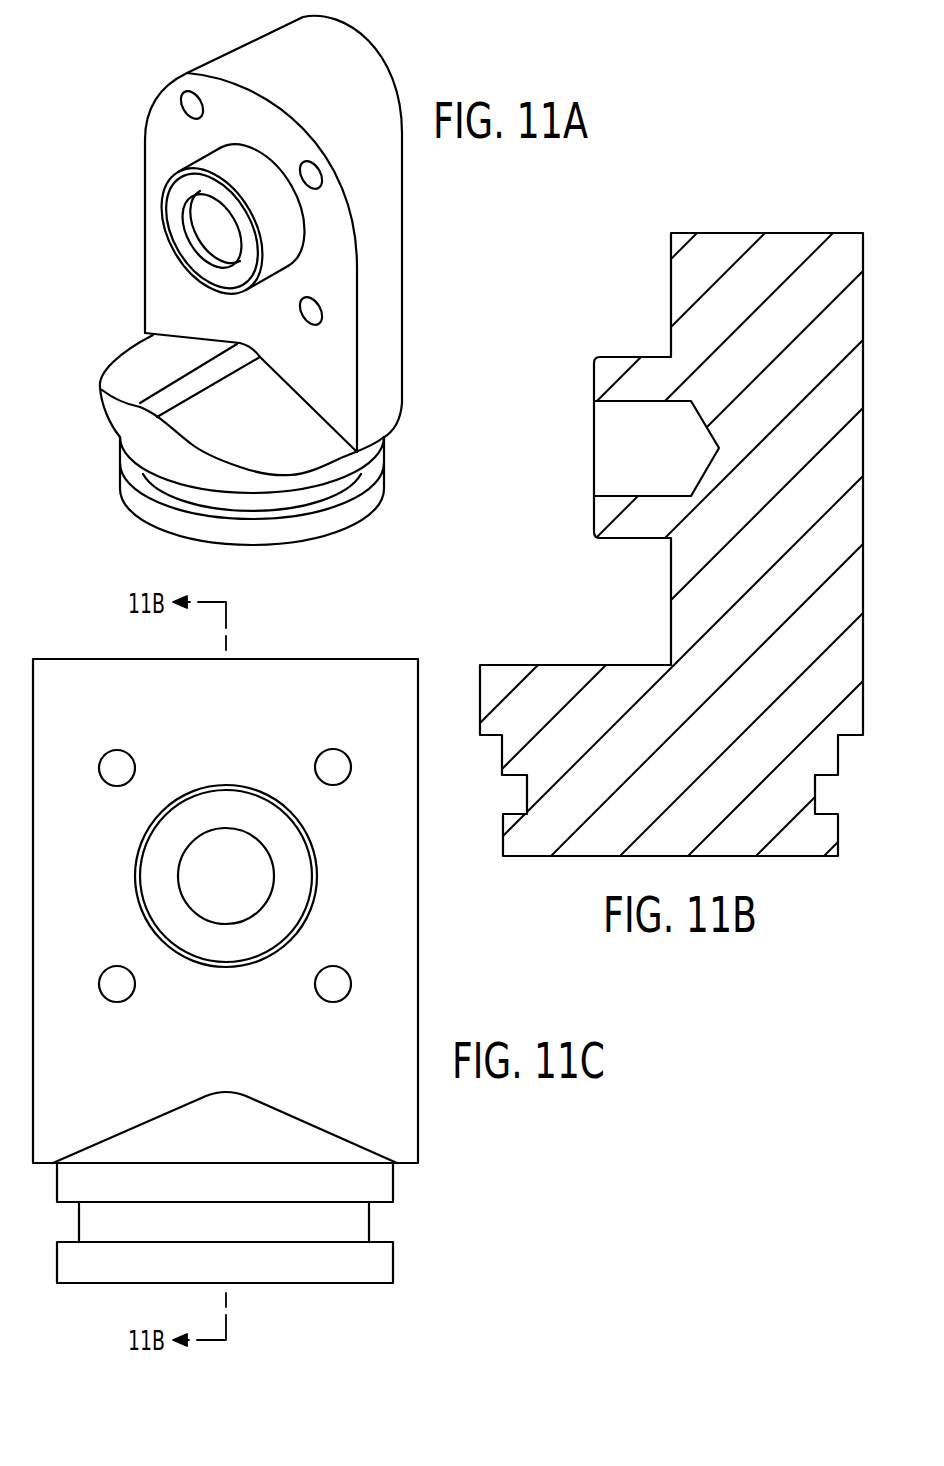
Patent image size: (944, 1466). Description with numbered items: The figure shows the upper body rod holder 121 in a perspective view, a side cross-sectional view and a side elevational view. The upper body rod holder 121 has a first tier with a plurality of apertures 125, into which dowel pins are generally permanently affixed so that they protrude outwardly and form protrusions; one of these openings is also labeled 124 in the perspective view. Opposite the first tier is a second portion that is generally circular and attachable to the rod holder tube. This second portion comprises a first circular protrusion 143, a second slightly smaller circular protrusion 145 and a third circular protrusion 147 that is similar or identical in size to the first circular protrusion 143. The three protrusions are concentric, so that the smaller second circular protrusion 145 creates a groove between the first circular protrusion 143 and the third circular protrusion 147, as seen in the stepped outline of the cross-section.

In FIG. 11A, the upper body rod holder 121 is at (265, 50).
In FIG. 11A, the mounting hole 124 is at (190, 105).
In FIG. 11A, the apertures 125 is at (312, 315).
In FIG. 11C, the apertures 125 is at (335, 748).
In FIG. 11C, the first circular protrusion 143 is at (395, 1185).
In FIG. 11C, the second slightly smaller circular protrusion 145 is at (369, 1222).
In FIG. 11C, the third circular protrusion 147 is at (393, 1265).